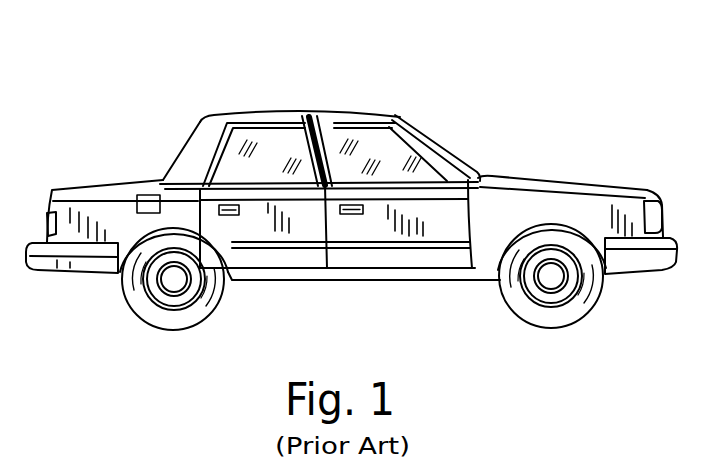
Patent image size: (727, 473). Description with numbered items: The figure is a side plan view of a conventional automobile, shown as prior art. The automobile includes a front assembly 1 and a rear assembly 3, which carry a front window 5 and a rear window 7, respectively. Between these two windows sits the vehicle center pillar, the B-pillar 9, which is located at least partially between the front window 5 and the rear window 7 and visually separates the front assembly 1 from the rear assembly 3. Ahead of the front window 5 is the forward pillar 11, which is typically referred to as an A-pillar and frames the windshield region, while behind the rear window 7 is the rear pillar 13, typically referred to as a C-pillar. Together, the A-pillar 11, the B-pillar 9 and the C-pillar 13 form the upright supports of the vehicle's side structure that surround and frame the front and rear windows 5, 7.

The front assembly 1 is at (438, 156).
The rear assembly 3 is at (245, 150).
The front window 5 is at (360, 138).
The rear window 7 is at (278, 145).
The B-pillar 9 is at (315, 117).
The forward pillar 11 is at (423, 158).
The rear pillar 13 is at (205, 150).